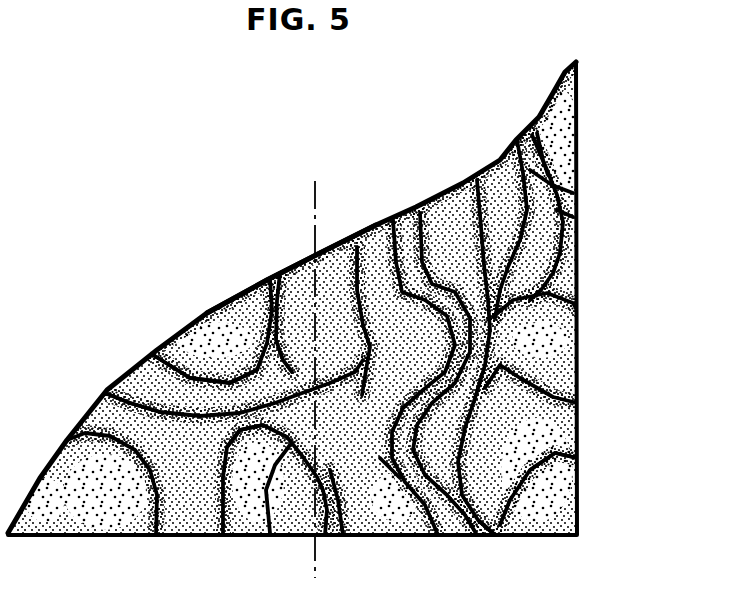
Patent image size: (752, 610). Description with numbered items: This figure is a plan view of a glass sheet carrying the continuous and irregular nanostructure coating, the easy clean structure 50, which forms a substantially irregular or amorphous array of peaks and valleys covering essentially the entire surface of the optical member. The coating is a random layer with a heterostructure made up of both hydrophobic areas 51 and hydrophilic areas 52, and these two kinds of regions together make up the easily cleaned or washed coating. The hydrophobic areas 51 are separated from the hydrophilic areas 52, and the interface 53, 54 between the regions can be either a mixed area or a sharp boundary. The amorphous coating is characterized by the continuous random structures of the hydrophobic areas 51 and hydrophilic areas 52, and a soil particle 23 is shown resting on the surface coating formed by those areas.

The easy clean structure 50 is at (658, 376).
The hydrophobic areas 51 is at (246, 537).
The hydrophilic areas 52 is at (152, 351).
The interface 53 is at (268, 279).
The interface 54 is at (172, 342).
The soil particle 23 is at (327, 278).